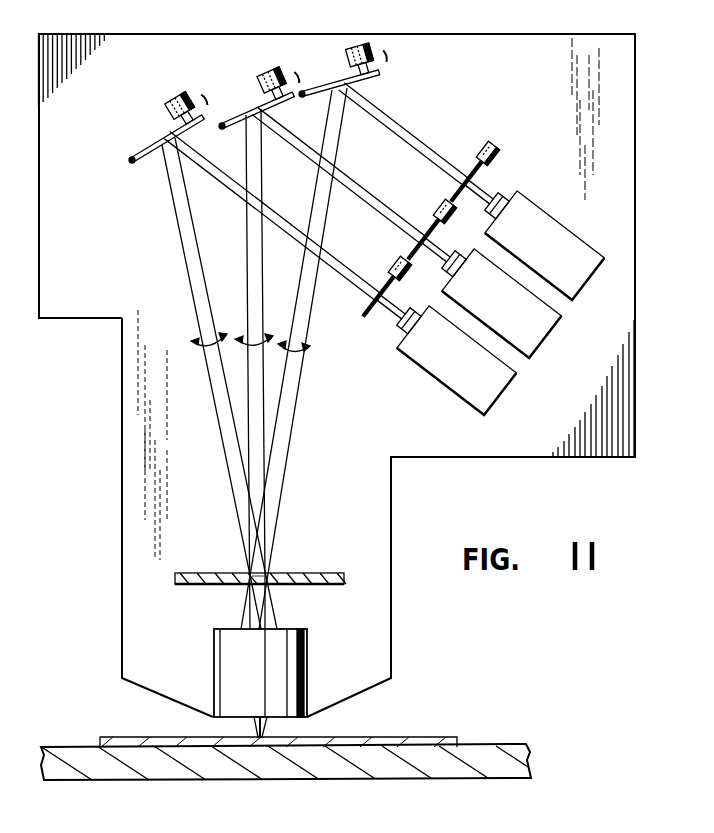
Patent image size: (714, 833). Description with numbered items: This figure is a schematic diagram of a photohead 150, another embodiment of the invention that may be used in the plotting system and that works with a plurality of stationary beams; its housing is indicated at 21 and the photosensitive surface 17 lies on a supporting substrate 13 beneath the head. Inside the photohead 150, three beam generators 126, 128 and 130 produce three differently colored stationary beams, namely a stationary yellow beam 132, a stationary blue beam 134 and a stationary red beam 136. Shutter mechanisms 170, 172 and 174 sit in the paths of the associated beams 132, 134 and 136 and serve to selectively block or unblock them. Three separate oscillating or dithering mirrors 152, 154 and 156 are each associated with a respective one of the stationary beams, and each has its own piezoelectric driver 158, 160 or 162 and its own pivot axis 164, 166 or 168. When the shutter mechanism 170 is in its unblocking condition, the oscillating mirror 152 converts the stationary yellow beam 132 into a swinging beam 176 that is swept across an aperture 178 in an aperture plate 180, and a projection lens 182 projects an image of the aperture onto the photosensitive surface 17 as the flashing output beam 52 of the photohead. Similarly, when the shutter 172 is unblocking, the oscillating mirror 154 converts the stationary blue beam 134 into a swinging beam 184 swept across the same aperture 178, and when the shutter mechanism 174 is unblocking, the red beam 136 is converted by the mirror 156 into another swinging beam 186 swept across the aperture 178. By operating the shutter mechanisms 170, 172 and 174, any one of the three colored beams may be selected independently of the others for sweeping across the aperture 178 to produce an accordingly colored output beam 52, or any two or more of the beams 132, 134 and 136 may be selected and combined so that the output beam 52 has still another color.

The photohead 150 is at (440, 33).
The housing wall 21 is at (518, 33).
The beam generator 126 is at (562, 226).
The beam generator 128 is at (545, 335).
The beam generator 130 is at (512, 377).
The stationary yellow beam 132 is at (429, 147).
The stationary blue beam 134 is at (382, 207).
The stationary red beam 136 is at (347, 270).
The shutter mechanism 170 is at (473, 152).
The shutter mechanism 172 is at (427, 208).
The shutter mechanism 174 is at (380, 268).
The oscillating mirror 152 is at (332, 84).
The oscillating mirror 154 is at (251, 110).
The oscillating mirror 156 is at (153, 148).
The piezoelectric driver 158 is at (355, 45).
The piezoelectric driver 160 is at (263, 70).
The piezoelectric driver 162 is at (169, 100).
The pivot axis 164 is at (302, 96).
The pivot axis 166 is at (222, 128).
The pivot axis 168 is at (132, 162).
The swinging beam 176 is at (308, 306).
The swinging beam 184 is at (245, 287).
The swinging beam 186 is at (188, 278).
The aperture 178 is at (259, 572).
The aperture plate 180 is at (330, 573).
The projection lens 182 is at (300, 658).
The flashing output beam 52 is at (267, 727).
The photosensitive surface 17 is at (442, 737).
The substrate 13 is at (497, 755).